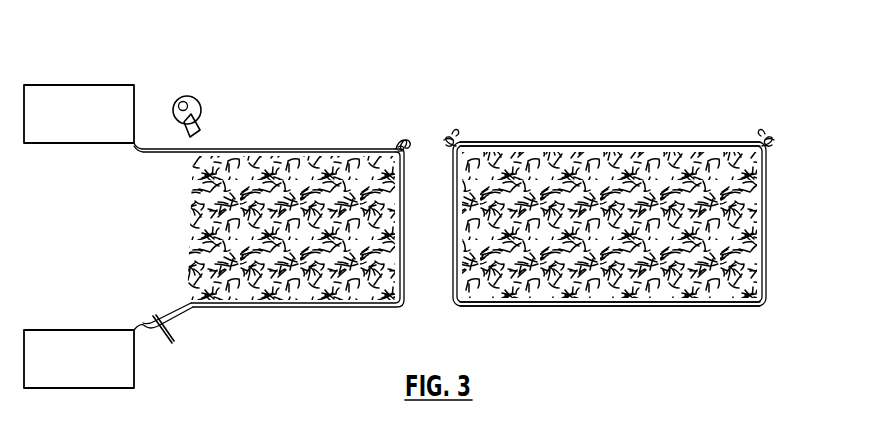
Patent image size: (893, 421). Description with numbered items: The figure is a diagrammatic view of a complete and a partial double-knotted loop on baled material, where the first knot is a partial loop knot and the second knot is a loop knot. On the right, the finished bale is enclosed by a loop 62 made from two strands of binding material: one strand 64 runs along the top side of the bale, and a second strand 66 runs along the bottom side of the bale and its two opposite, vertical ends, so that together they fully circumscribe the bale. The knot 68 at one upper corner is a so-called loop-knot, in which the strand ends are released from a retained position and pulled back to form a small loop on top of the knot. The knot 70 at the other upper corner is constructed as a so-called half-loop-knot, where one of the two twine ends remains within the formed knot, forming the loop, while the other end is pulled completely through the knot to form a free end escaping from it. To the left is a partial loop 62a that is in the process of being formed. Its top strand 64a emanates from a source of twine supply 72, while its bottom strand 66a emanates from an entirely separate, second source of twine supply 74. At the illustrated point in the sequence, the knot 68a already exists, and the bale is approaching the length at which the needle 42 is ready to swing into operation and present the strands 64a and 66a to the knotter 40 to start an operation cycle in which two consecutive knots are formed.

The knotter 40 is at (192, 88).
The needle 42 is at (178, 322).
The loop 62 is at (640, 135).
The partial loop 62a is at (304, 140).
The strand 64 is at (556, 142).
The top strand 64a is at (237, 147).
The second strand 66 is at (620, 308).
The bottom strand 66a is at (282, 308).
The knot 68 is at (762, 133).
The knot 68a is at (398, 137).
The knot 70 is at (456, 134).
The source of twine supply 72 is at (78, 85).
The second source of twine supply 74 is at (78, 330).